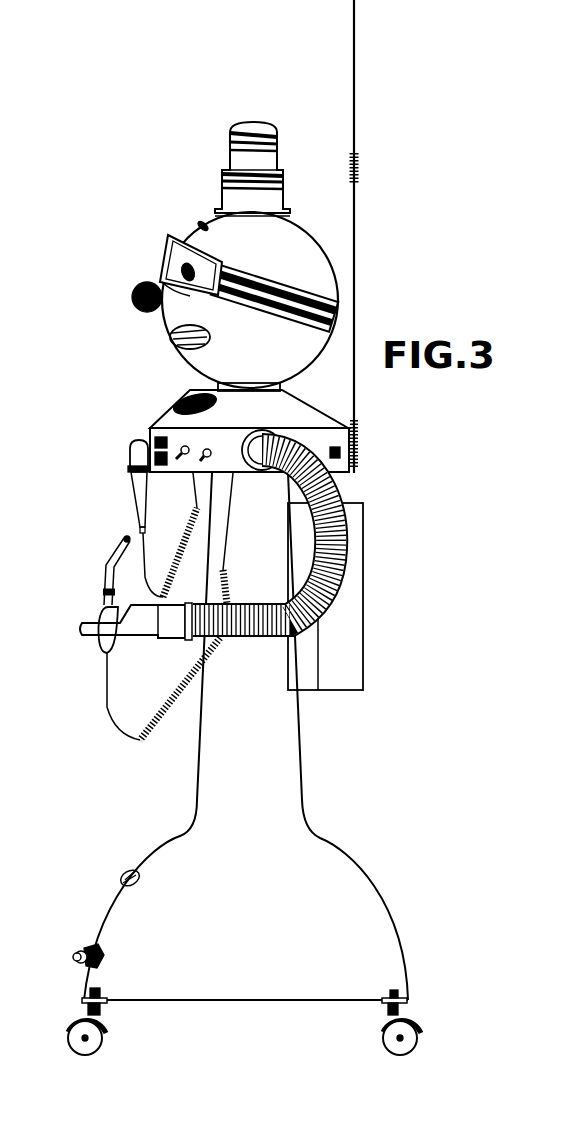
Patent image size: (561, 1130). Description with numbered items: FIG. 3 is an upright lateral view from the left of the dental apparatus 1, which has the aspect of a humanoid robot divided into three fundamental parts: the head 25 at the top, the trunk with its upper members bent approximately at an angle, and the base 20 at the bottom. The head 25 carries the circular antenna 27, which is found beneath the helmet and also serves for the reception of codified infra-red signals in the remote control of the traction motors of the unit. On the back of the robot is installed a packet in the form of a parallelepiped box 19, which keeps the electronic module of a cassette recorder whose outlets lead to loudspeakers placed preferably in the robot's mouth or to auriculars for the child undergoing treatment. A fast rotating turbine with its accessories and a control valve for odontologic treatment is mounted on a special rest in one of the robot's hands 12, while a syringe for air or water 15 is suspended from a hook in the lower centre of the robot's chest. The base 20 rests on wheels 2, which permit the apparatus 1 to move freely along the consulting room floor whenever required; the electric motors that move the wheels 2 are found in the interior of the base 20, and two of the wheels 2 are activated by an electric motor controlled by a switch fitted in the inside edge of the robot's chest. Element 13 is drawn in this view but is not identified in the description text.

The dental apparatus 1 is at (235, 408).
The wheels 2 is at (82, 1030).
The robot's hand 12 is at (140, 623).
The nozzle 13 is at (108, 605).
The syringe for air or water 15 is at (140, 453).
The parallelepiped box 19 is at (357, 577).
The base 20 is at (350, 883).
The head 25 is at (207, 235).
The antenna 27 is at (297, 211).